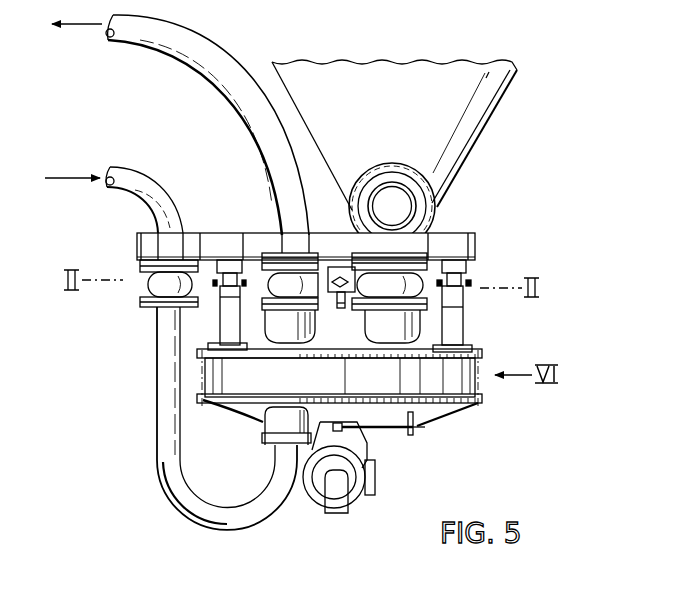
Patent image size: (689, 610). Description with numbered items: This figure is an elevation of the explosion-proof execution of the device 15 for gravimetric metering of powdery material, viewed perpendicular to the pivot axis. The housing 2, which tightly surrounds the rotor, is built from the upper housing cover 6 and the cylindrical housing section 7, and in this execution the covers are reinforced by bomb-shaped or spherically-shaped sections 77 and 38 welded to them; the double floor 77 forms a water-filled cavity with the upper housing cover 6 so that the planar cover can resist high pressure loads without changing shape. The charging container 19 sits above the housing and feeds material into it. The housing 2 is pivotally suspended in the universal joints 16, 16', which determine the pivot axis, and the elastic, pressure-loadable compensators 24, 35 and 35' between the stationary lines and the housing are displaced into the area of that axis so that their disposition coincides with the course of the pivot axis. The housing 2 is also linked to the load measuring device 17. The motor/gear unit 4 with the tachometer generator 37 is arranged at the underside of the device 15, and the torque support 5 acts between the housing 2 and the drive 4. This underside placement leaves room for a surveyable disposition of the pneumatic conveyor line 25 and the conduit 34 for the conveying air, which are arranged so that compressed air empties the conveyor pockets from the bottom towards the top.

The housing 2 is at (443, 400).
The motor/gear unit 4 is at (350, 507).
The torque support 5 is at (375, 430).
The upper housing cover 6 is at (198, 352).
The cylindrical housing section 7 is at (202, 405).
The device 15 is at (480, 412).
The spring universal joint 16 is at (306, 274).
The universal joint 16' is at (475, 291).
The load measuring device 17 is at (328, 296).
The charging container 19 is at (430, 114).
The compensator 24 is at (433, 272).
The pneumatic conveyor line 25 is at (188, 55).
The conduit for conveying air 34 is at (138, 183).
The compensator 35 is at (146, 297).
The compensator 35' is at (301, 253).
The tachometer generator 37 is at (332, 517).
The spherically-shaped reinforcing section 38 is at (253, 413).
The double floor 77 is at (262, 334).